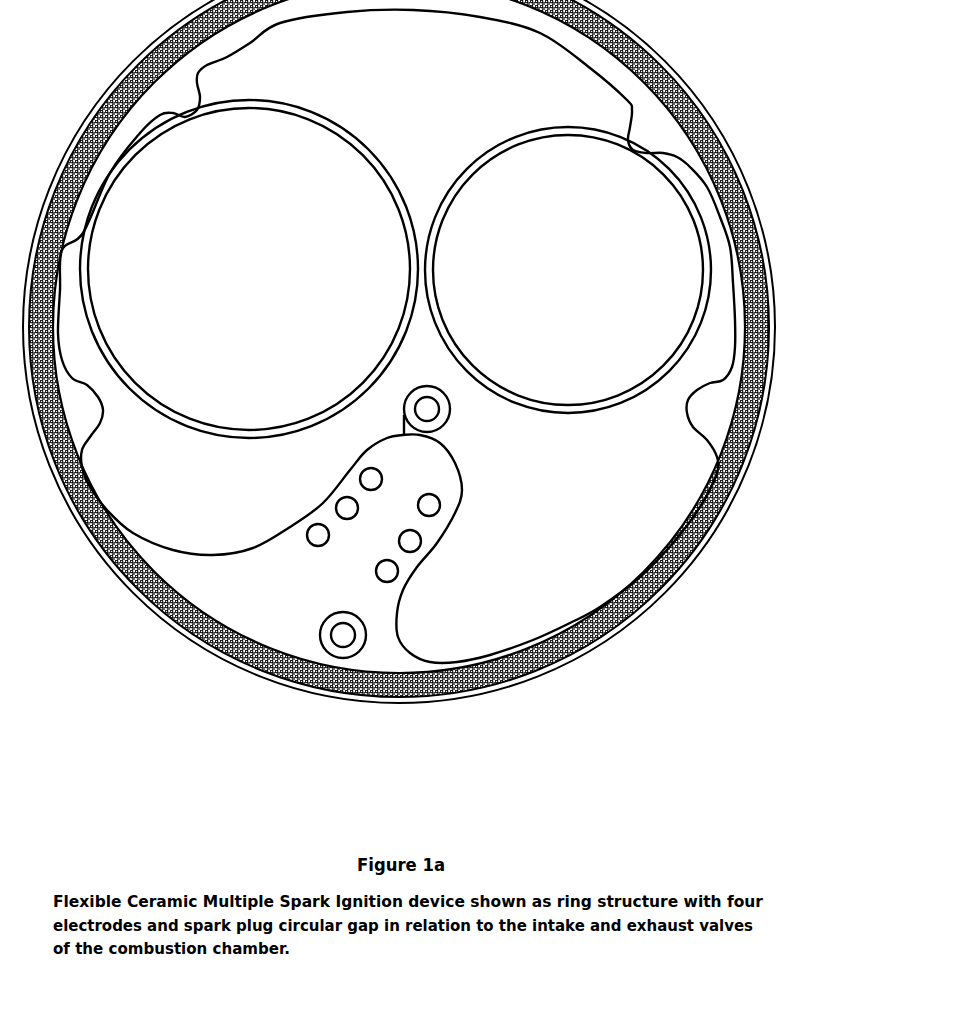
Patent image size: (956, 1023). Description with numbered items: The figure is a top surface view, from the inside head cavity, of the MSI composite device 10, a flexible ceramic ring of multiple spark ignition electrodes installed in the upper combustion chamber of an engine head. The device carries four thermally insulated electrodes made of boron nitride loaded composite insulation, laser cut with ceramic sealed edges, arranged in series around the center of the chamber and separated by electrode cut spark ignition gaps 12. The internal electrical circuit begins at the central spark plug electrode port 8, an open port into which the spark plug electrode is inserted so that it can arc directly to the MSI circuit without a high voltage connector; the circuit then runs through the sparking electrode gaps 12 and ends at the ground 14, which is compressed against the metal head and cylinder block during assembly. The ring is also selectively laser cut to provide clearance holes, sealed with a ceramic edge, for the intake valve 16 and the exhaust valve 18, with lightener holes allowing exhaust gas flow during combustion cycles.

The central spark plug electrode port 8 is at (392, 419).
The MSI composite device 10 is at (524, 697).
The electrode cut spark ignition gaps 12 is at (674, 398).
The ground 14 is at (380, 626).
The intake valve 16 is at (280, 135).
The exhaust valve 18 is at (528, 126).